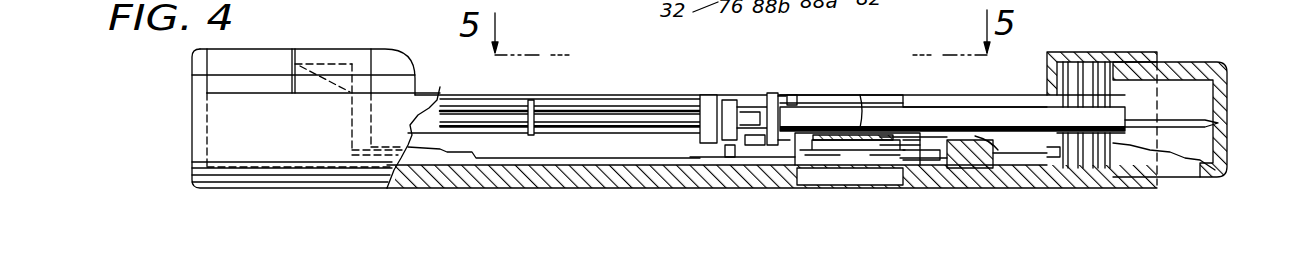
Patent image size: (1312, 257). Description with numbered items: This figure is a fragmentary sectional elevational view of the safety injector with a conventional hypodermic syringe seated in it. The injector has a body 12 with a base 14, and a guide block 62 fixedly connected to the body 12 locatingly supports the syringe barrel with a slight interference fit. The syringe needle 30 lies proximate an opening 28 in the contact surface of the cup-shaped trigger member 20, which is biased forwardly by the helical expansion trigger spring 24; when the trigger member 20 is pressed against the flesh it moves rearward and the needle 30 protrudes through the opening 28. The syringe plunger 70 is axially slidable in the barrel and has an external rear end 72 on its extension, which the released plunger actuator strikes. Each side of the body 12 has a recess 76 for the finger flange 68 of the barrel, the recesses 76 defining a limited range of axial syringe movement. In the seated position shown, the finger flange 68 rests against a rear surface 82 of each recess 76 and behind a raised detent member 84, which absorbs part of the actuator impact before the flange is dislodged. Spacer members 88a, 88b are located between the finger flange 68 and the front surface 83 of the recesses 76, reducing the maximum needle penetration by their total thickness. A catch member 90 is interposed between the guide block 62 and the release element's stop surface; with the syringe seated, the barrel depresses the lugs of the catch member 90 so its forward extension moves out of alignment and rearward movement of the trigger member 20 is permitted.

The body 12 is at (362, 190).
The base 14 is at (543, 188).
The trigger member 20 is at (1205, 177).
The trigger spring 24 is at (1102, 188).
The opening 28 is at (1222, 99).
The needle 30 is at (1200, 130).
The guide block 62 is at (857, 101).
The finger flange 68 is at (732, 96).
The plunger 70 is at (677, 128).
The rear end 72 is at (529, 136).
The recess 76 is at (760, 138).
The rear surface 82 is at (725, 95).
The front surface 83 is at (798, 94).
The detent member 84 is at (748, 138).
The spacer member 88a is at (790, 95).
The spacer member 88b is at (782, 95).
The catch member 90 is at (848, 165).